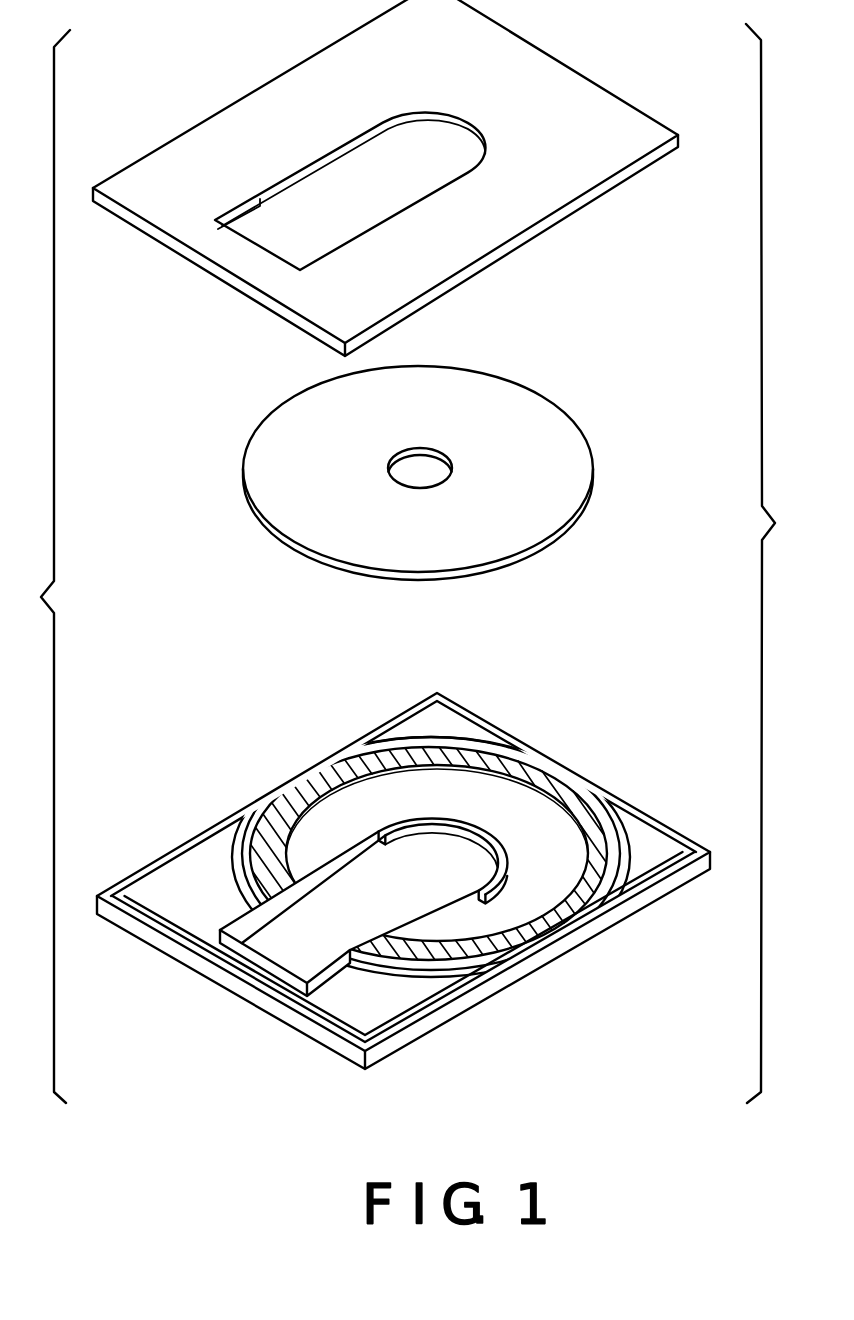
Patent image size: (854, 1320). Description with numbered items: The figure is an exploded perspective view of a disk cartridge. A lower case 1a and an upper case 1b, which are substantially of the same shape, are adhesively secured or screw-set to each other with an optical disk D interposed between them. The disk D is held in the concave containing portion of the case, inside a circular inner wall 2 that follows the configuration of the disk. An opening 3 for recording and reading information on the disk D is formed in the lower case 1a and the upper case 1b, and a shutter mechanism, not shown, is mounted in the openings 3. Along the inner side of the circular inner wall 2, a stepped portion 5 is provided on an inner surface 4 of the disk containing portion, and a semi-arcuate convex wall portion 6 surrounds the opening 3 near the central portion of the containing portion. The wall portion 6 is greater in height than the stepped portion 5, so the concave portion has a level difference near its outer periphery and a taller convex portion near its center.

The lower case 1a is at (630, 137).
The upper case 1b is at (657, 845).
The circular inner wall 2 is at (447, 740).
The opening 3 is at (457, 140).
The inner surface 4 is at (555, 828).
The stepped portion 5 is at (352, 770).
The semi-arcuate convex wall portion 6 is at (417, 822).
The optical disk D is at (558, 428).